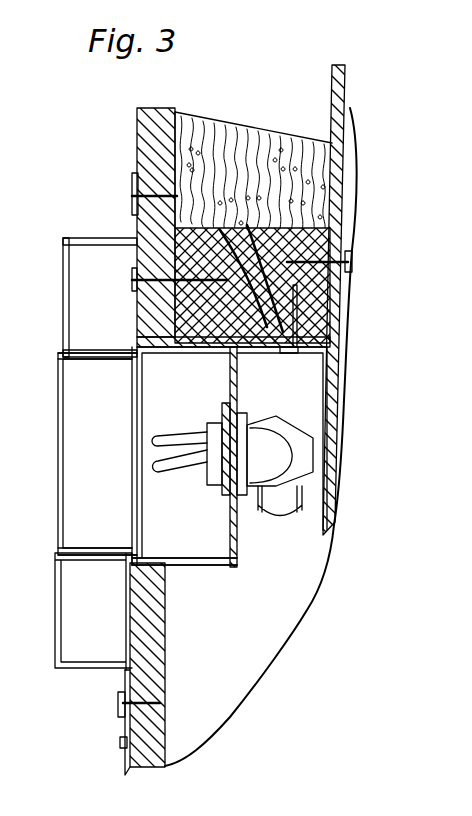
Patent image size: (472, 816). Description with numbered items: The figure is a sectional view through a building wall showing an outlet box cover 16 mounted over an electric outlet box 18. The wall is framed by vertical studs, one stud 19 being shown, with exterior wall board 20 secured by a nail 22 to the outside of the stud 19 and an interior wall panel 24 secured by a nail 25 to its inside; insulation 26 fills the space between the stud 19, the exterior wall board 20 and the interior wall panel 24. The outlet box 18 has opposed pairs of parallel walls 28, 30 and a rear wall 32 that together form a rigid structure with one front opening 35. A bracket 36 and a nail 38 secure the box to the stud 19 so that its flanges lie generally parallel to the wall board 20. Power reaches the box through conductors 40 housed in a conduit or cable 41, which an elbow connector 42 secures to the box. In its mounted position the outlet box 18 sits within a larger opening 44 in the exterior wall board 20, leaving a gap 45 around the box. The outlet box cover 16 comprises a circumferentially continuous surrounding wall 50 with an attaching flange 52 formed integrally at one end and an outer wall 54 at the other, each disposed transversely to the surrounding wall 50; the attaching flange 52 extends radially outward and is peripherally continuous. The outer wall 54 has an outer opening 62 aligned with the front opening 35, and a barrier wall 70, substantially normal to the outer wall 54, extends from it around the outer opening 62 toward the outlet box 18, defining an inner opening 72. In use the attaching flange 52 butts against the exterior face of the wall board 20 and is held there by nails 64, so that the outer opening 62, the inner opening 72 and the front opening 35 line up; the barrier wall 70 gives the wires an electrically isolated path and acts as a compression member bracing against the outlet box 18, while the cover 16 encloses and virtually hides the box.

The outlet box cover 16 is at (46, 688).
The electric outlet box 18 is at (241, 581).
The stud 19 is at (260, 208).
The exterior wall board 20 is at (138, 135).
The nail 22 is at (192, 170).
The interior wall panel 24 is at (329, 109).
The nail 25 is at (318, 228).
The insulation 26 is at (223, 117).
The parallel wall 28 is at (212, 570).
The parallel wall 30 is at (120, 355).
The rear wall 32 is at (238, 545).
The front opening 35 is at (137, 500).
The bracket 36 is at (282, 438).
The nail 38 is at (247, 376).
The conductors 40 is at (187, 403).
The conduit or cable 41 is at (288, 513).
The elbow connector 42 is at (227, 407).
The larger opening 44 is at (122, 569).
The gap 45 is at (167, 571).
The surrounding wall 50 is at (78, 238).
The attaching flange 52 is at (133, 176).
The outer wall 54 is at (63, 258).
The outer opening 62 is at (58, 396).
The nails 64 is at (134, 197).
The barrier wall 70 is at (103, 362).
The inner opening 72 is at (123, 481).